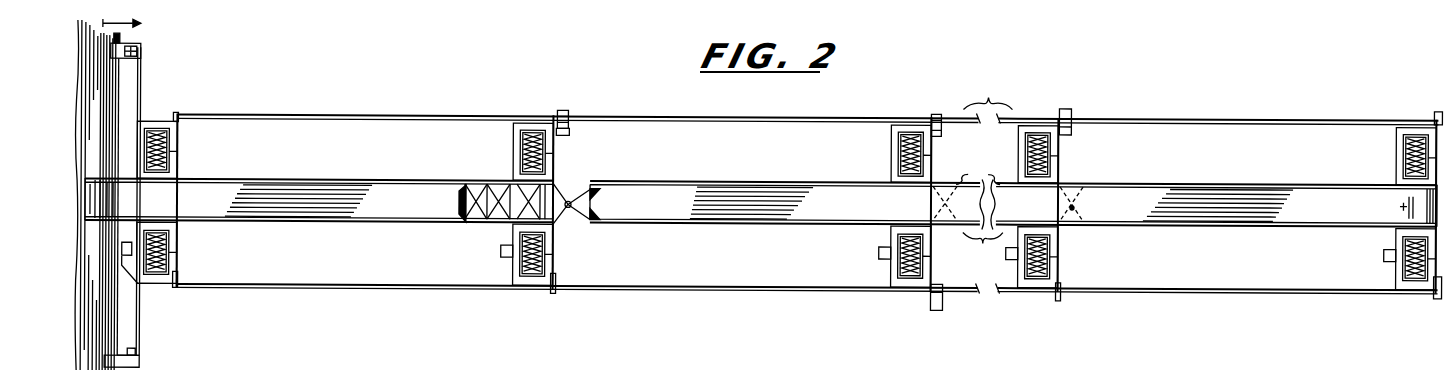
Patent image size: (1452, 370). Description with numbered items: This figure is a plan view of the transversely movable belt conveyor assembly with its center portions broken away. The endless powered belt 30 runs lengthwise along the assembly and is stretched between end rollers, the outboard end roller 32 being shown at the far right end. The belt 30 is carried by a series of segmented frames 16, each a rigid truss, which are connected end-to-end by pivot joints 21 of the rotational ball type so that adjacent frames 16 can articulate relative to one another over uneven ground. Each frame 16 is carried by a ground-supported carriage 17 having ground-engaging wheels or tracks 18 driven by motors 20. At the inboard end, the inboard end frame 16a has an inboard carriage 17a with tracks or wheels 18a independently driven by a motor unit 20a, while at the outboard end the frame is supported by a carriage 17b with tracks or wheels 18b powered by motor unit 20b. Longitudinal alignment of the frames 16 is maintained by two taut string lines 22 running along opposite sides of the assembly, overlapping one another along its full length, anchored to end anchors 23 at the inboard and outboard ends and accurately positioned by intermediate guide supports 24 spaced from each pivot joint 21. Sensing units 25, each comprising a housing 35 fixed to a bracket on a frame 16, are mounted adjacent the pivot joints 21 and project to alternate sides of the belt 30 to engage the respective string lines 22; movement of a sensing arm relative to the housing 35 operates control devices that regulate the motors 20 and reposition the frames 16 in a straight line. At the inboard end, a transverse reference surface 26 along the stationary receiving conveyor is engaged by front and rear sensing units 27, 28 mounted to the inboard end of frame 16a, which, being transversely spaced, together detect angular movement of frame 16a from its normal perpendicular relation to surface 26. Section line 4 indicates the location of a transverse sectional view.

The section line 4 is at (130, 27).
The front sensing unit 27 is at (141, 47).
The end anchor 23 is at (1435, 290).
The ground-engaging tracks or wheels 18a is at (172, 243).
The inboard carriage 17a is at (177, 168).
The motor unit 20a is at (137, 278).
The reference surface 26 is at (113, 335).
The rear sensing unit 28 is at (142, 362).
The tracks or wheels 18b is at (530, 272).
The sensing unit 25 is at (1073, 111).
The housing 35 is at (569, 131).
The pivot joint 21 is at (568, 200).
The inboard end frame 16a is at (476, 182).
The segmented frame 16 is at (1163, 189).
The endless powered belt 30 is at (759, 186).
The string line 22 is at (790, 288).
The ground-engaging wheels or tracks 18 is at (1398, 146).
The ground-supported carriage 17 is at (1395, 234).
The motor 20 is at (1384, 252).
The intermediate guide support 24 is at (1062, 289).
The motor unit 20b is at (501, 250).
The ground-supported carriage 17b is at (555, 252).
The end roller 32 is at (1394, 209).